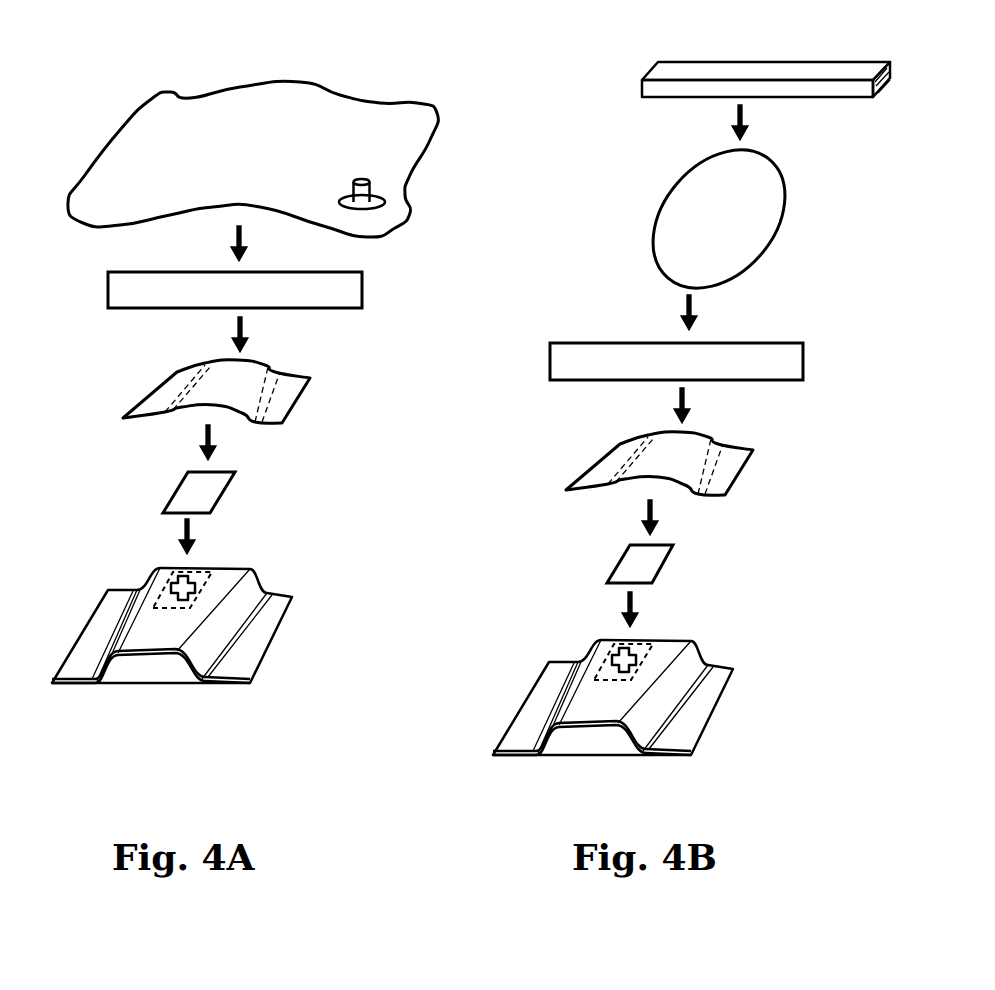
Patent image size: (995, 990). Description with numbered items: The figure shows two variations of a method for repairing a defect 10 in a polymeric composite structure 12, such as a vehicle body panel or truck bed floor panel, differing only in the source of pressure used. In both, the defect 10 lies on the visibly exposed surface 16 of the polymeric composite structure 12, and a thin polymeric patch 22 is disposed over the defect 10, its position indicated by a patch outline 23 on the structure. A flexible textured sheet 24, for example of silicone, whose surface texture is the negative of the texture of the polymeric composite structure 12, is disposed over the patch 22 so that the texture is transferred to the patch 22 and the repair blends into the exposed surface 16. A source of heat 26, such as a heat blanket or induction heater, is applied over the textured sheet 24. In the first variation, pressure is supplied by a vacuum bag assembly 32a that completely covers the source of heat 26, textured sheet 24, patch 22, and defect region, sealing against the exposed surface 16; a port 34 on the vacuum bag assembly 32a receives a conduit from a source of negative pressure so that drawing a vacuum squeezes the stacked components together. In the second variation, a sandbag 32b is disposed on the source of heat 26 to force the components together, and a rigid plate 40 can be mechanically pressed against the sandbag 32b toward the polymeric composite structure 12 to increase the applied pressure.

In FIG. 4A, the defect 10 is at (207, 582).
In FIG. 4B, the defect 10 is at (650, 647).
In FIG. 4A, the polymeric composite structure 12 is at (268, 612).
In FIG. 4B, the polymeric composite structure 12 is at (717, 678).
In FIG. 4A, the exposed surface 16 is at (100, 643).
In FIG. 4B, the exposed surface 16 is at (540, 723).
In FIG. 4A, the patch 22 is at (212, 488).
In FIG. 4B, the patch 22 is at (652, 560).
In FIG. 4A, the patch outline 23 is at (163, 585).
In FIG. 4B, the patch outline 23 is at (600, 657).
In FIG. 4A, the textured sheet 24 is at (285, 400).
In FIG. 4B, the textured sheet 24 is at (730, 463).
In FIG. 4A, the source of heat 26 is at (318, 295).
In FIG. 4B, the source of heat 26 is at (773, 368).
In FIG. 4A, the vacuum bag assembly 32a is at (303, 98).
In FIG. 4A, the port 34 is at (370, 186).
In FIG. 4B, the sandbag 32b is at (733, 245).
In FIG. 4B, the rigid plate 40 is at (778, 68).